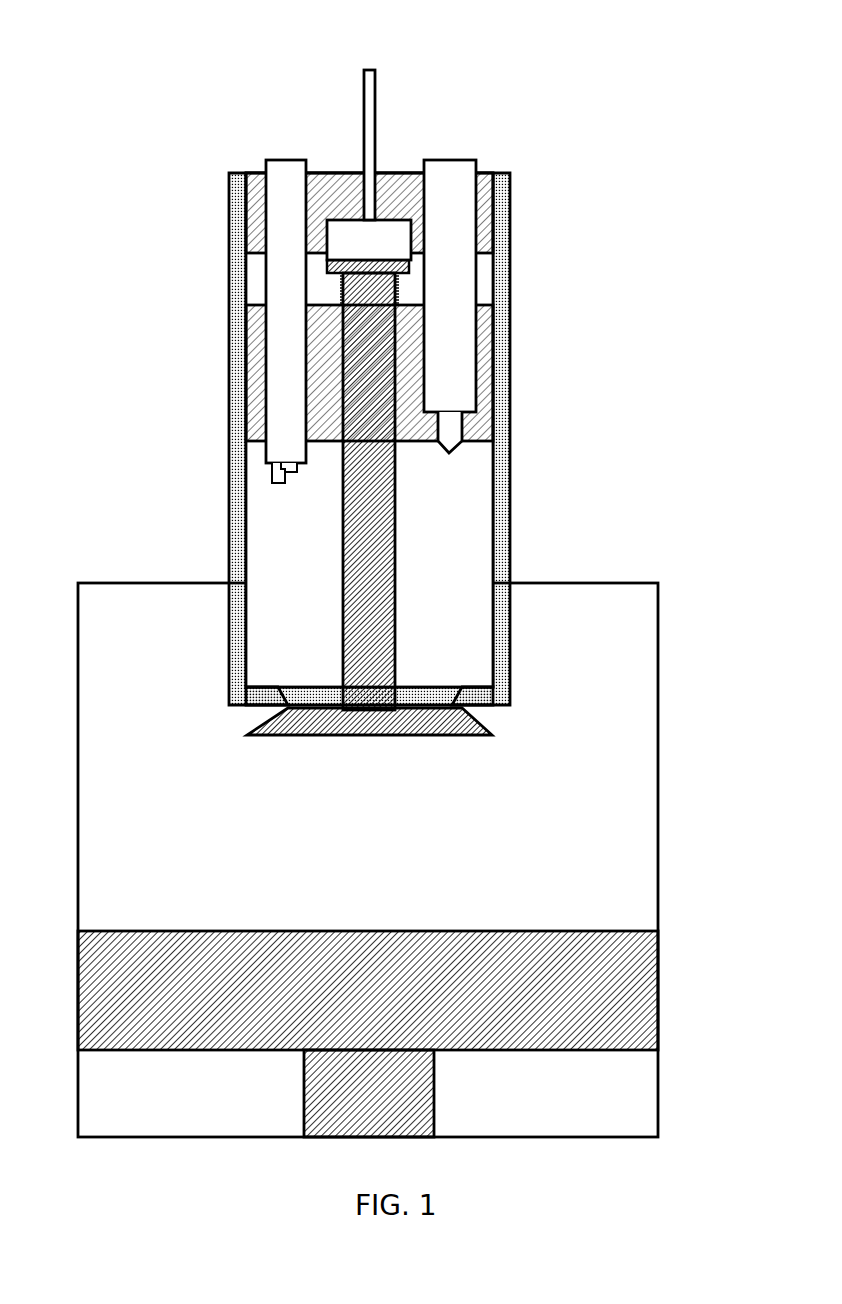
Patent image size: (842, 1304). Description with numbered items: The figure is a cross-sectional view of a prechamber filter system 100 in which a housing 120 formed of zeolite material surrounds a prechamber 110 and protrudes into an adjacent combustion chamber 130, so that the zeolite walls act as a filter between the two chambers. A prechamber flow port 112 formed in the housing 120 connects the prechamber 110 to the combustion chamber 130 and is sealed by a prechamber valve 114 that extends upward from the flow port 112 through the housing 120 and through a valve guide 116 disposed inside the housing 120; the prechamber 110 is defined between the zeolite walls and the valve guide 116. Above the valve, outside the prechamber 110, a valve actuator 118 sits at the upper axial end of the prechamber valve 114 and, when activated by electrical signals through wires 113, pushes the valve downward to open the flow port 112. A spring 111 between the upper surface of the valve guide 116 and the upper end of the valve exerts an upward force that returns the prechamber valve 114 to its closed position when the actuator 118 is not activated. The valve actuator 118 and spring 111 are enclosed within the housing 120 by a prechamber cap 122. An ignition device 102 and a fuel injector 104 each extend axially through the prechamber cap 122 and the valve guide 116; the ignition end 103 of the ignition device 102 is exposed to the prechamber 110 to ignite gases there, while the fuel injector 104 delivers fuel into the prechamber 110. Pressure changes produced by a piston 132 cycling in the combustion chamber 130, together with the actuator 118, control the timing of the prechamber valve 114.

The prechamber filter system 100 is at (158, 55).
The ignition device 102 is at (272, 160).
The ignition end 103 is at (260, 476).
The fuel injector 104 is at (457, 160).
The prechamber 110 is at (460, 617).
The spring 111 is at (400, 292).
The prechamber flow port 112 is at (318, 693).
The wires 113 is at (375, 76).
The prechamber valve 114 is at (395, 508).
The valve guide 116 is at (480, 423).
The valve actuator 118 is at (382, 227).
The housing 120 is at (510, 543).
The prechamber cap 122 is at (340, 172).
The combustion chamber 130 is at (510, 849).
The piston 132 is at (633, 931).